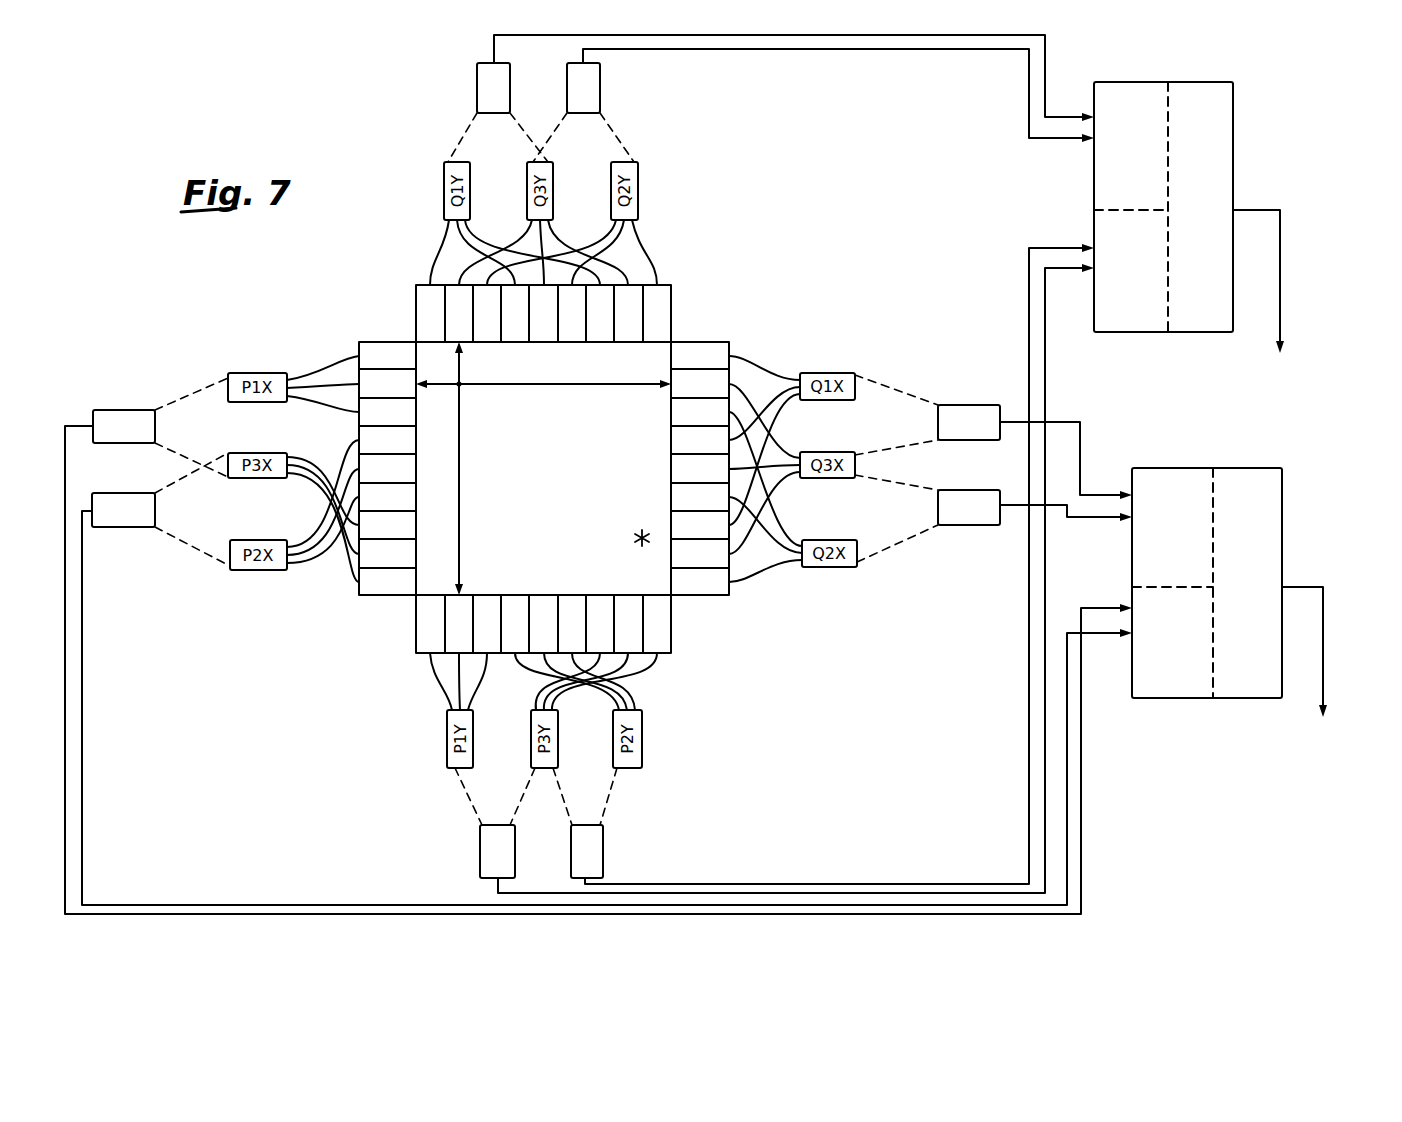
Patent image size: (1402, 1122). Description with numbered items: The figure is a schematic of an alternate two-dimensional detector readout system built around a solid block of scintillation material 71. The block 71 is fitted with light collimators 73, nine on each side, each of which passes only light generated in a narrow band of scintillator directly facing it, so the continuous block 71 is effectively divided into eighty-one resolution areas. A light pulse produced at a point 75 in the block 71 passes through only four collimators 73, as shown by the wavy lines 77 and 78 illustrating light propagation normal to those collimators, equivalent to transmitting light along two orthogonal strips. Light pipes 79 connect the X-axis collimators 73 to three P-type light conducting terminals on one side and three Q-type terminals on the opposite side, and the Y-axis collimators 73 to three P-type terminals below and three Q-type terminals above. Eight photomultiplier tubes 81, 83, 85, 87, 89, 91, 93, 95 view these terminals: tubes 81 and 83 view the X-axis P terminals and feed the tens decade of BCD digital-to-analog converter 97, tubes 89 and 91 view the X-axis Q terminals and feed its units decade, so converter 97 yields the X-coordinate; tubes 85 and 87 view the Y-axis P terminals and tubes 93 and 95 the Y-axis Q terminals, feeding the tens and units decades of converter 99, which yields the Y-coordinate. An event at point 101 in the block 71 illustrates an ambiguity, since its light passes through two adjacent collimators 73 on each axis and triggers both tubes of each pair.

The scintillation material block 71 is at (582, 470).
The light collimators 73 is at (702, 388).
The light pulse point 75 is at (461, 383).
The wavy line of light propagation 77 is at (573, 388).
The wavy line of light propagation 78 is at (465, 469).
The light pipes 79 is at (325, 366).
The photomultiplier tube 81 is at (116, 410).
The photomultiplier tube 83 is at (116, 493).
The photomultiplier tube 85 is at (480, 848).
The photomultiplier tube 87 is at (603, 848).
The photomultiplier tube 89 is at (962, 405).
The photomultiplier tube 91 is at (962, 490).
The photomultiplier tube 93 is at (477, 90).
The photomultiplier tube 95 is at (600, 91).
The BCD digital-to-analog converter 97 is at (1178, 468).
The BCD digital-to-analog converter 99 is at (1135, 82).
The event point 101 is at (638, 534).